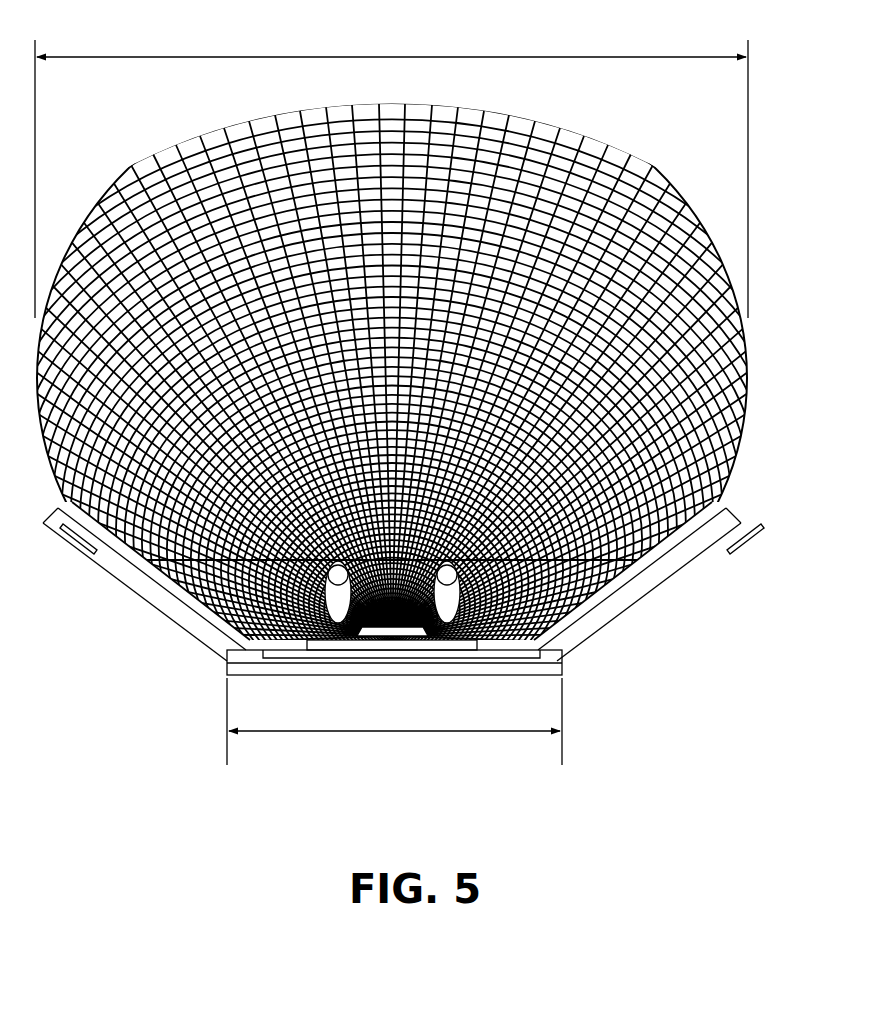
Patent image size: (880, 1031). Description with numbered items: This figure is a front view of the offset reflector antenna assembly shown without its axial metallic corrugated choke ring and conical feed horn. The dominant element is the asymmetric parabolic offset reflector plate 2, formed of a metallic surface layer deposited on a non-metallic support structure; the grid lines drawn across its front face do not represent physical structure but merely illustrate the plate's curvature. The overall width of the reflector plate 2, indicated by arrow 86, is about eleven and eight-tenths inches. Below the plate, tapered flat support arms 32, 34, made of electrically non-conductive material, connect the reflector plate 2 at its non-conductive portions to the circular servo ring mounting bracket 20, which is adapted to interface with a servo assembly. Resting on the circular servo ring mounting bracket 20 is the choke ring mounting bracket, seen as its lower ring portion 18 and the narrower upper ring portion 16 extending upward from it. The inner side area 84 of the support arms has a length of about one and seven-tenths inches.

The asymmetric offset reflector plate 2 is at (757, 376).
The upper ring portion 16 is at (322, 624).
The lower ring portion 18 is at (436, 624).
The circular servo ring mounting bracket 20 is at (229, 676).
The support arm 32 is at (608, 618).
The support arm 34 is at (178, 610).
The inner side area of support arms 84 is at (380, 732).
The reflector plate width arrow 86 is at (392, 56).